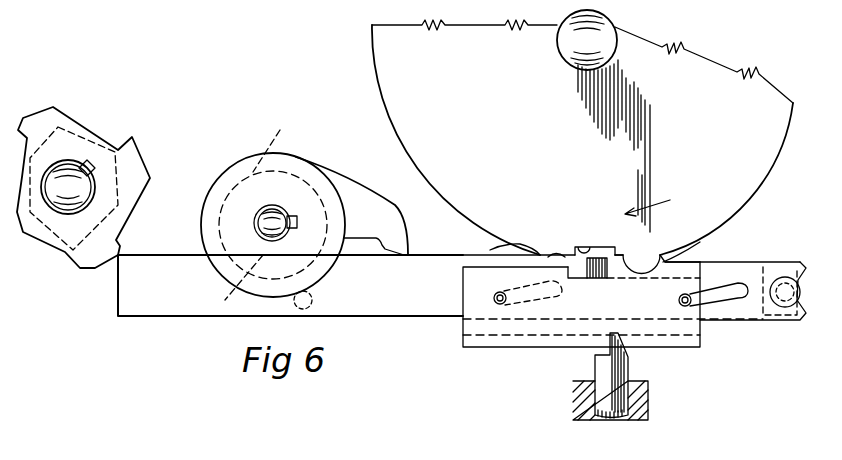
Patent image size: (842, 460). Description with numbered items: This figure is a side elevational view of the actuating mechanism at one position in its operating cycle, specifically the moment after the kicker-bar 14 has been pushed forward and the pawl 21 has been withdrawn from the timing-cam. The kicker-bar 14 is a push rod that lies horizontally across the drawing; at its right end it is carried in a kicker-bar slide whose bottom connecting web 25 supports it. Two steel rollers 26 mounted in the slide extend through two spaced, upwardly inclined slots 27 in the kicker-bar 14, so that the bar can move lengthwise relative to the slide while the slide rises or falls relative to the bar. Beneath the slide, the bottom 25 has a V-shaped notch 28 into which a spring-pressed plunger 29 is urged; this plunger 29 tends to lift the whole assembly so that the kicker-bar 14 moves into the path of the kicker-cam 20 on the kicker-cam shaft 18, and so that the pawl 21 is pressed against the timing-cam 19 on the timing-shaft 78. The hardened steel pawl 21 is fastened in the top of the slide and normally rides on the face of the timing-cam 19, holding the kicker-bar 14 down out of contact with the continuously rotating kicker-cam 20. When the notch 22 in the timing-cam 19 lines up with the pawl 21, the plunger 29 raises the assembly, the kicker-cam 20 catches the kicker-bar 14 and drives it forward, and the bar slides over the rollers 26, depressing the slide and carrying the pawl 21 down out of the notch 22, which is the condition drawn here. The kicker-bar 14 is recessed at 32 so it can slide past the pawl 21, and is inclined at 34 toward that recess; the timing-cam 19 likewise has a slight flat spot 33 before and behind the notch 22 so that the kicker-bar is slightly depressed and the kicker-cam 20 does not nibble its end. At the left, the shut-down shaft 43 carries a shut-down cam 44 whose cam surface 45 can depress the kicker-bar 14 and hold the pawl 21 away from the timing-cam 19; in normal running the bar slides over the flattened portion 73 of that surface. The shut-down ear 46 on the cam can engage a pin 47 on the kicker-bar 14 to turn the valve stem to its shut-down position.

The kicker-bar 14 is at (438, 258).
The kicker-cam shaft 18 is at (70, 168).
The timing-cam 19 is at (624, 146).
The kicker-cam 20 is at (102, 167).
The pawl 21 is at (616, 254).
The notch 22 is at (578, 250).
The bottom connecting web 25 is at (540, 340).
The rollers 26 is at (492, 302).
The inclined slots 27 is at (515, 305).
The V-shaped notch 28 is at (612, 330).
The plunger 29 is at (650, 403).
The recess 32 is at (672, 253).
The flat spot 33 is at (555, 250).
The inclined portion 34 is at (512, 244).
The shut-down shaft 43 is at (258, 213).
The shut-down cam 44 is at (290, 153).
The cam surface 45 is at (269, 143).
The shut-down ear 46 is at (353, 180).
The pin 47 is at (312, 305).
The flattened portion 73 is at (232, 282).
The timing-shaft 78 is at (598, 33).